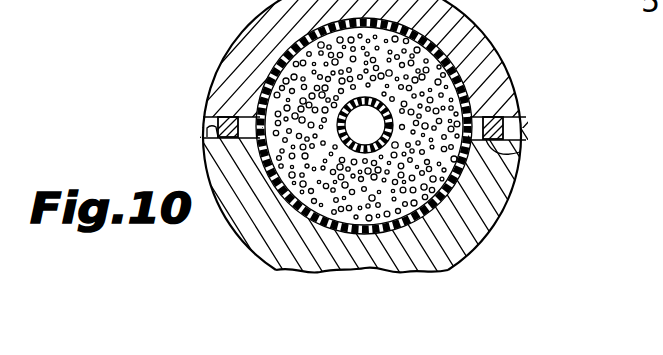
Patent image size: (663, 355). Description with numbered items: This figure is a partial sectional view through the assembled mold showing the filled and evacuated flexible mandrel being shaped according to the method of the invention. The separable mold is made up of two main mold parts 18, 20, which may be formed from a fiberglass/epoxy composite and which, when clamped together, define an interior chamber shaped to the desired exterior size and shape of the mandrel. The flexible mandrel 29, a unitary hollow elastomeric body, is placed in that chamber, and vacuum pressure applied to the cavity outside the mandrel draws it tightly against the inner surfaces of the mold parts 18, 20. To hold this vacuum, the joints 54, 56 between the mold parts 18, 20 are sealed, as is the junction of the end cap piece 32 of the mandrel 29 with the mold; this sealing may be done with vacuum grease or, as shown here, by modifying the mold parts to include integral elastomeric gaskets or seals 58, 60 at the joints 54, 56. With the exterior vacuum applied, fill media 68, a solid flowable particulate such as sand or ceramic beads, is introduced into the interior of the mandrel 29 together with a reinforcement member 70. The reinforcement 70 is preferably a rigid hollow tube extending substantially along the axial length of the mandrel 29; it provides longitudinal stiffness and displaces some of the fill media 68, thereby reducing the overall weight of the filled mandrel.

The mold part 18 is at (513, 82).
The mold part 20 is at (496, 203).
The flexible mandrel 29 is at (265, 82).
The end cap piece 32 is at (116, 11).
The joint 54 is at (208, 141).
The joint 56 is at (504, 119).
The elastomeric gasket 58 is at (228, 117).
The elastomeric gasket 60 is at (522, 156).
The fill media 68 is at (501, 48).
The reinforcement member 70 is at (364, 97).